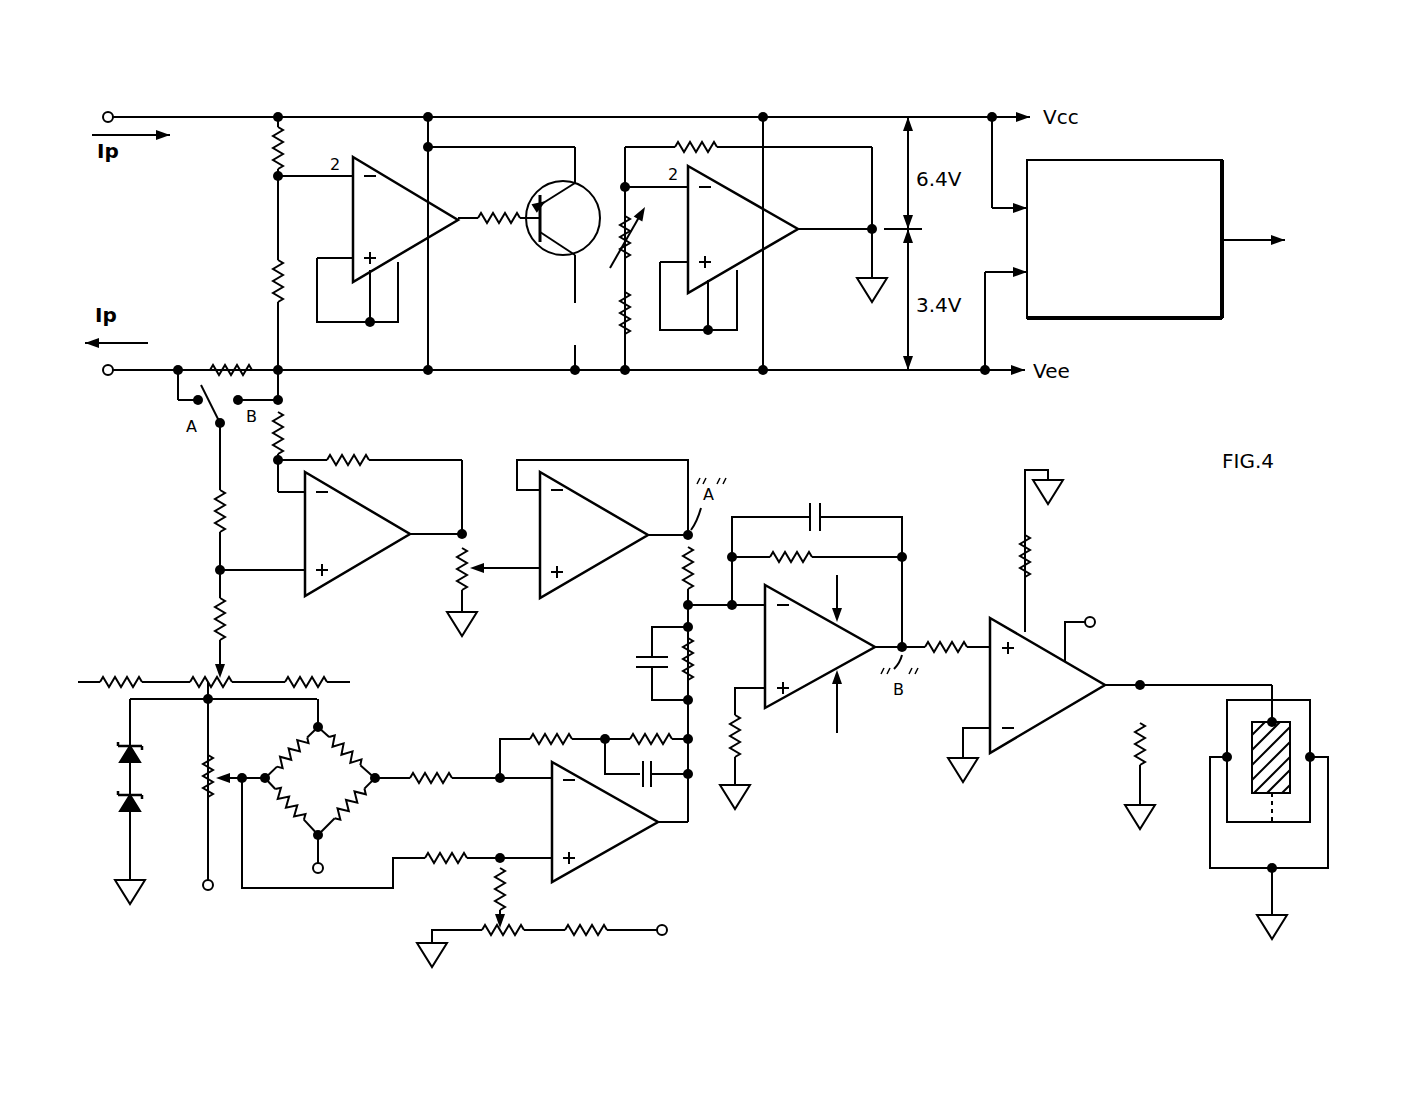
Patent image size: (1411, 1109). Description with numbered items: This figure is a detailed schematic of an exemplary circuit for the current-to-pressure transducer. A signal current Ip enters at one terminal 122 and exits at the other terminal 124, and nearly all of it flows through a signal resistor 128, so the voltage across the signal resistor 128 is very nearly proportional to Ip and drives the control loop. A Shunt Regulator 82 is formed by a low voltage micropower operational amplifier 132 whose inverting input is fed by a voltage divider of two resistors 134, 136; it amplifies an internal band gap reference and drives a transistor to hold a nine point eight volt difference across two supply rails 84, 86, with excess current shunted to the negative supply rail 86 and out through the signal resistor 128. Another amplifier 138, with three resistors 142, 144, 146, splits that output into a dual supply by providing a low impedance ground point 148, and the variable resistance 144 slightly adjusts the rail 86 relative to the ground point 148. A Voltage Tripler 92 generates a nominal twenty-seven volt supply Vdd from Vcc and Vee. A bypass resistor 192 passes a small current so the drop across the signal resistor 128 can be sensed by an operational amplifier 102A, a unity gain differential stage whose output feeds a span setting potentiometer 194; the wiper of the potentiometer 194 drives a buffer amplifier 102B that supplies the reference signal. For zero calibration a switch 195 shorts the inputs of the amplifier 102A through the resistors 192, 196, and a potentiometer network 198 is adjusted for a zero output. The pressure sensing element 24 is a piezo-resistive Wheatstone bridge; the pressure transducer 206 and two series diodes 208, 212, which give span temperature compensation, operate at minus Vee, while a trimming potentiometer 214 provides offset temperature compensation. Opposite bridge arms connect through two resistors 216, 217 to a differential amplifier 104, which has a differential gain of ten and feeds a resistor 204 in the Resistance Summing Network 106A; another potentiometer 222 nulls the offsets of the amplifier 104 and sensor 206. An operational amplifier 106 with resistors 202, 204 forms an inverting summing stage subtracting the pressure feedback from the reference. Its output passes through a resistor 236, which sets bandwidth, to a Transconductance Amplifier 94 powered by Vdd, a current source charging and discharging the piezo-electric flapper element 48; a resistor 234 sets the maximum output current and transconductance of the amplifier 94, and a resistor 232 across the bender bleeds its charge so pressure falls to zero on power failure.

The terminal 122 is at (87, 117).
The terminal 124 is at (87, 371).
The supply rail 84 is at (286, 128).
The resistor 134 is at (272, 174).
The resistor 136 is at (272, 283).
The signal resistor 128 is at (241, 365).
The negative supply rail 86 is at (362, 370).
The low voltage micropower operational amplifier 132 is at (393, 242).
The shunt regulator 82 is at (436, 262).
The resistor 142 is at (672, 143).
The amplifier 138 is at (736, 250).
The variable resistance 144 is at (616, 238).
The resistor 146 is at (629, 318).
The ground point 148 is at (871, 280).
The voltage tripler 92 is at (1171, 318).
The bypass resistor 192 is at (291, 438).
The switch 195 is at (208, 420).
The resistor 196 is at (216, 520).
The potentiometer network 198 is at (198, 642).
The operational amplifier 102A is at (357, 534).
The buffer amplifier 102B is at (602, 529).
The potentiometer 194 is at (455, 576).
The resistor 202 is at (680, 570).
The resistance summing network 106A is at (626, 664).
The resistor 204 is at (696, 670).
The operational amplifier 106 is at (813, 656).
The resistor 236 is at (943, 642).
The transconductance amplifier 94 is at (1043, 696).
The resistor 234 is at (1034, 552).
The resistor 232 is at (1133, 753).
The piezo-electric flapper element 48 is at (1320, 678).
The pressure transducer 206 is at (369, 740).
The semiconductor diode 208 is at (124, 753).
The semiconductor diode 212 is at (122, 804).
The trimming potentiometer 214 is at (204, 776).
The pressure sensing element 24 is at (254, 910).
The resistor 216 is at (432, 772).
The resistor 217 is at (455, 828).
The differential amplifier 104 is at (596, 808).
The potentiometer 222 is at (521, 944).